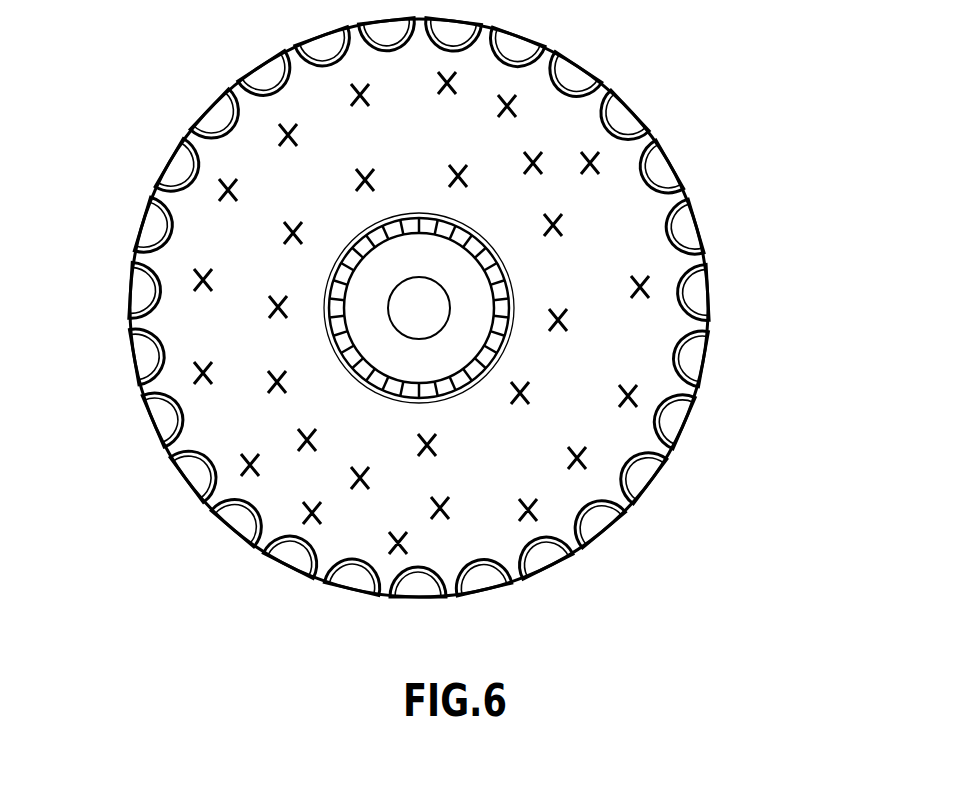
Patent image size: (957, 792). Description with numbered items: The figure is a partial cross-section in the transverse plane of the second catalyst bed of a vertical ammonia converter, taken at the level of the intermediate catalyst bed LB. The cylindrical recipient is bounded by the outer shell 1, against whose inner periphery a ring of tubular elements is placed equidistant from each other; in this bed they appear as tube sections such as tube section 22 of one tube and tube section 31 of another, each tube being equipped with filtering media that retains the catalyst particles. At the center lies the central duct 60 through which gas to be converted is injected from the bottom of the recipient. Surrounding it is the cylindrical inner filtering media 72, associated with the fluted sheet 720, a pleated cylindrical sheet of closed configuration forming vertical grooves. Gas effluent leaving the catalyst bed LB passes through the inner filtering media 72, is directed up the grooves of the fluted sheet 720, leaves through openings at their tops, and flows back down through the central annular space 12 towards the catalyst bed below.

The outer shell 1 is at (370, 597).
The central annular space 12 is at (460, 357).
The tube section 22 is at (570, 78).
The tube section 31 is at (592, 207).
The central duct 60 is at (420, 325).
The inner filtering media 72 is at (508, 338).
The fluted sheet 720 is at (493, 273).
The intermediate catalyst bed LB is at (270, 408).